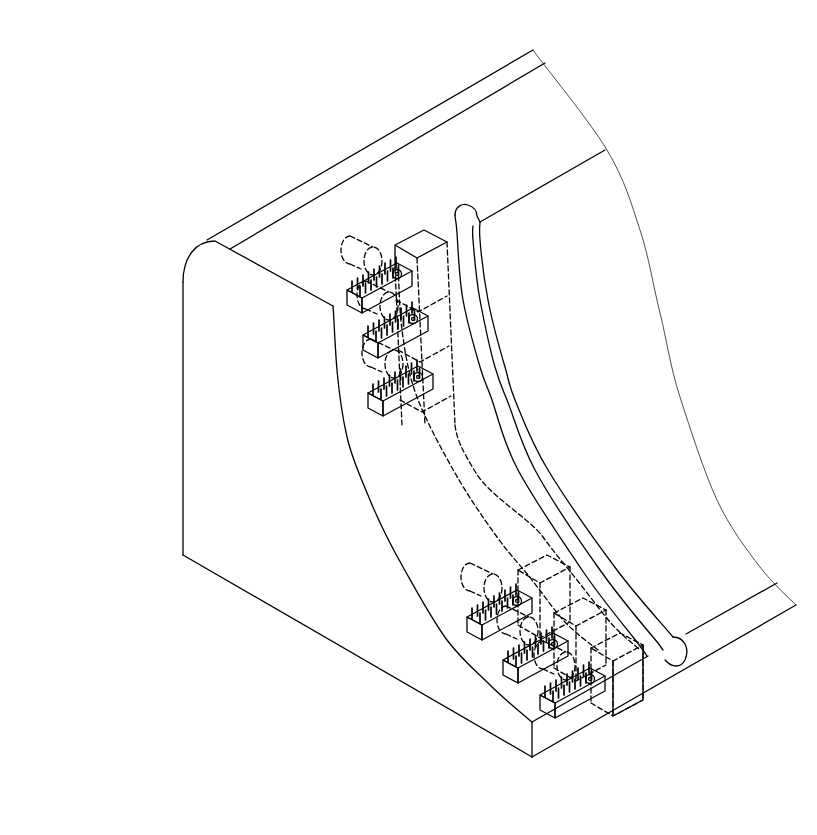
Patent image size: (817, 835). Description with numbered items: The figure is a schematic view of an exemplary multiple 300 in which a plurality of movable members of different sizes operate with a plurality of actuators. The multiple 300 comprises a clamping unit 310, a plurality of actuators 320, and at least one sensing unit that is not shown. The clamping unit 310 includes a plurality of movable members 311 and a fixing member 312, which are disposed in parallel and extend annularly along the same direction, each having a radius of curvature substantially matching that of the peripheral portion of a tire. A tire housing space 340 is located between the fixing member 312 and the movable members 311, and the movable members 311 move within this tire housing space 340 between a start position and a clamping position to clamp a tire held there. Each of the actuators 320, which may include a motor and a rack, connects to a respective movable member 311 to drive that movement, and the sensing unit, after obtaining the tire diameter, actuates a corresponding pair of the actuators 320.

The multiple 300 is at (107, 58).
The clamping unit 310 is at (392, 56).
The movable members 311 is at (408, 232).
The fixing member 312 is at (472, 208).
The actuators 320 is at (370, 402).
The tire housing space 340 is at (662, 667).